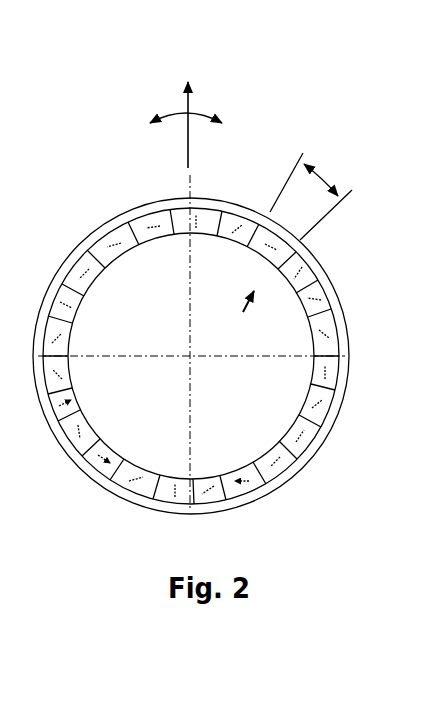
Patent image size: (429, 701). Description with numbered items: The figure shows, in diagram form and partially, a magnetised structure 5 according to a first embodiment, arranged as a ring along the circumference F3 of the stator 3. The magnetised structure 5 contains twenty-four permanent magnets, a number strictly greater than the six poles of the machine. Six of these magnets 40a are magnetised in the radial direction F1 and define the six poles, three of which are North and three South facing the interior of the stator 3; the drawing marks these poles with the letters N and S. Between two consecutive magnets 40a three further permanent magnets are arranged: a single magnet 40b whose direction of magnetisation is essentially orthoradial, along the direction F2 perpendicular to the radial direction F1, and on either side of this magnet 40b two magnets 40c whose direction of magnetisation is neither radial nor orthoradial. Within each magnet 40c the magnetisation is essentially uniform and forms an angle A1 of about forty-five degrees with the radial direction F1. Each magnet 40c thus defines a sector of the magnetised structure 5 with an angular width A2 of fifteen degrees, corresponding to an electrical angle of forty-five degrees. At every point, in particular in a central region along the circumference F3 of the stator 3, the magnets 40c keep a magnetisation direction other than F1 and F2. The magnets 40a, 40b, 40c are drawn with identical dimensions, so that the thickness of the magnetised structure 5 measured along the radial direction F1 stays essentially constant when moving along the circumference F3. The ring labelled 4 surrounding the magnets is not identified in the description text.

The stator 3 is at (58, 225).
The annular magnet ring 4 is at (326, 438).
The magnetised structure 5 is at (243, 312).
The radially magnetised permanent magnets 40a is at (167, 475).
The orthoradially magnetised permanent magnet 40b is at (140, 245).
The obliquely magnetised permanent magnets 40c is at (75, 311).
The radial direction F1 is at (188, 111).
The orthoradial direction F2 is at (115, 192).
The circumference F3 is at (170, 125).
The angle of magnetisation A1 is at (162, 178).
The angular width of sector A2 is at (311, 196).